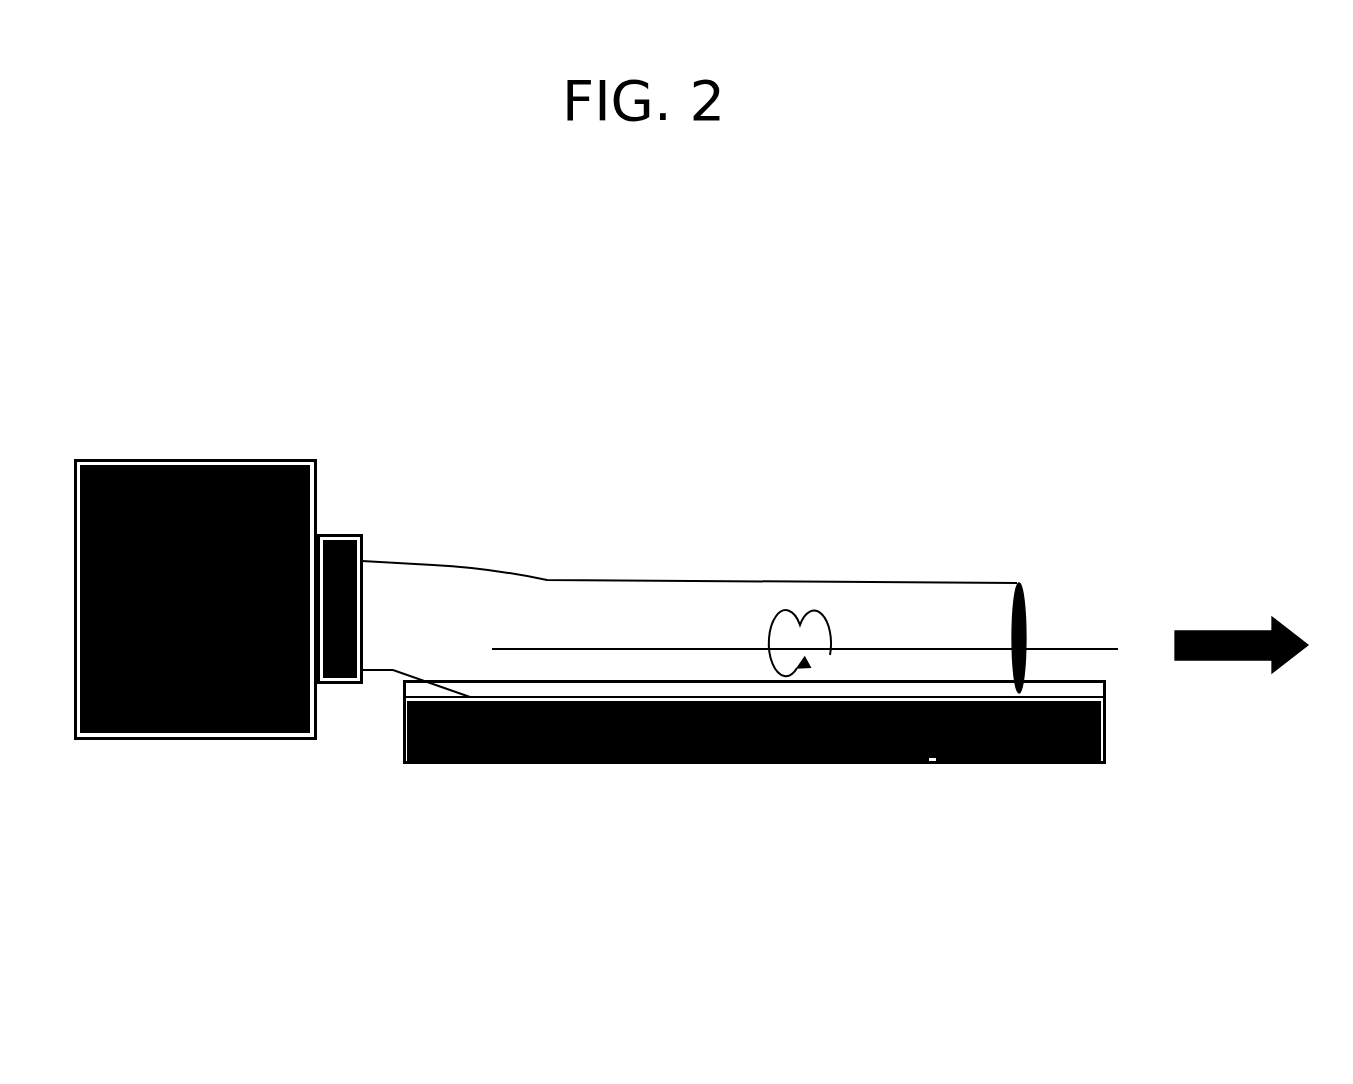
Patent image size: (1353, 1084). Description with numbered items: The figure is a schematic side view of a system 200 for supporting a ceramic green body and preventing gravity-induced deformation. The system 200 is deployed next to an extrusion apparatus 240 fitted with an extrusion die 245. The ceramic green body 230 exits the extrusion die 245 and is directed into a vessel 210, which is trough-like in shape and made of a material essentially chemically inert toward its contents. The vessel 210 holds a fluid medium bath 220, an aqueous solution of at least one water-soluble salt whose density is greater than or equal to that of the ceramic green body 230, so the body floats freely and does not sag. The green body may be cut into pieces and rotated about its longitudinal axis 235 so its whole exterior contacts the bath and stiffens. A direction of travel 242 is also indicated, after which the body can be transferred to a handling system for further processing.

The system 200 is at (667, 403).
The vessel 210 is at (1040, 720).
The fluid medium bath 220 is at (928, 773).
The ceramic green body 230 is at (712, 578).
The longitudinal axis 235 is at (866, 636).
The extrusion apparatus 240 is at (226, 712).
The extrusion die 245 is at (337, 672).
The scan direction 242 is at (1241, 617).